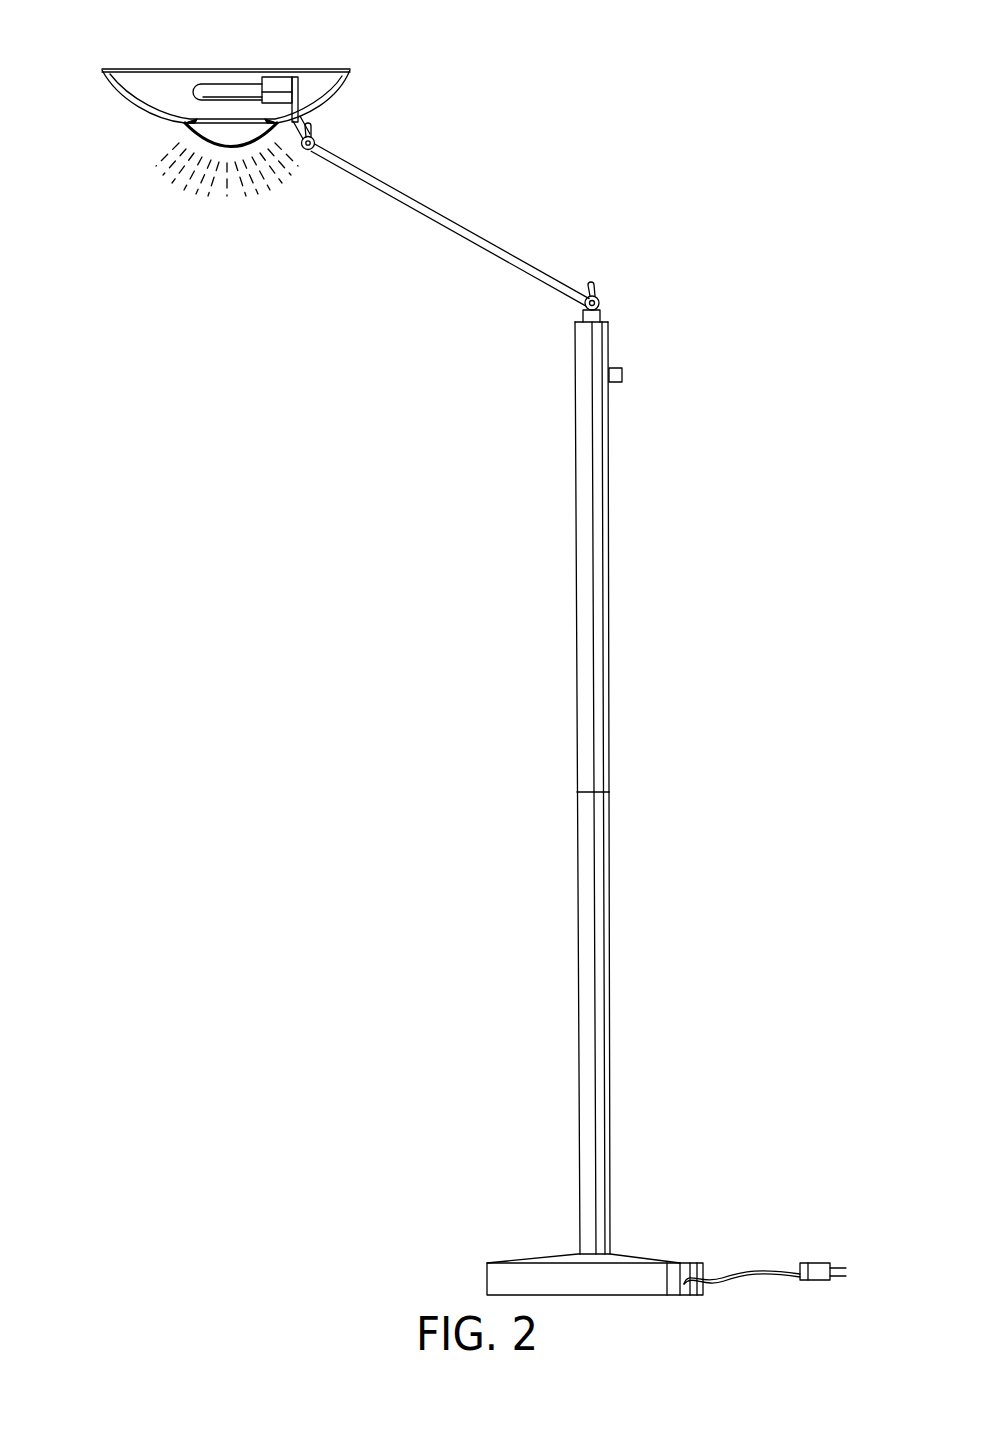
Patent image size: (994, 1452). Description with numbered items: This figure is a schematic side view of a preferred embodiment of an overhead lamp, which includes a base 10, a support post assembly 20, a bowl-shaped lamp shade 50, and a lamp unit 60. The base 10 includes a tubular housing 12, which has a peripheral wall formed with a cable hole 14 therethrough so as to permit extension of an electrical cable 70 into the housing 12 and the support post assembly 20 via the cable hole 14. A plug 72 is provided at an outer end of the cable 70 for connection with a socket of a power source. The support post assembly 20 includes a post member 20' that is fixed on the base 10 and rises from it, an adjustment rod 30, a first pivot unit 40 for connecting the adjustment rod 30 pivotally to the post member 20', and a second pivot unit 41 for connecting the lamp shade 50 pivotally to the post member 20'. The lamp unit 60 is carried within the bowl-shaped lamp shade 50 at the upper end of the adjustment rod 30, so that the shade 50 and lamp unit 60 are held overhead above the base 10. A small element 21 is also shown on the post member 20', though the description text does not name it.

The base 10 is at (639, 1249).
The tubular housing 12 is at (500, 1282).
The cable hole 14 is at (679, 1263).
The support post assembly 20 is at (632, 557).
The post member 20' is at (637, 993).
The switch 21 is at (623, 373).
The adjustment rod 30 is at (423, 201).
The first pivot unit 40 is at (601, 292).
The second pivot unit 41 is at (320, 141).
The bowl-shaped lamp shade 50 is at (136, 113).
The lamp unit 60 is at (275, 68).
The electrical cable 70 is at (769, 1262).
The plug 72 is at (818, 1264).